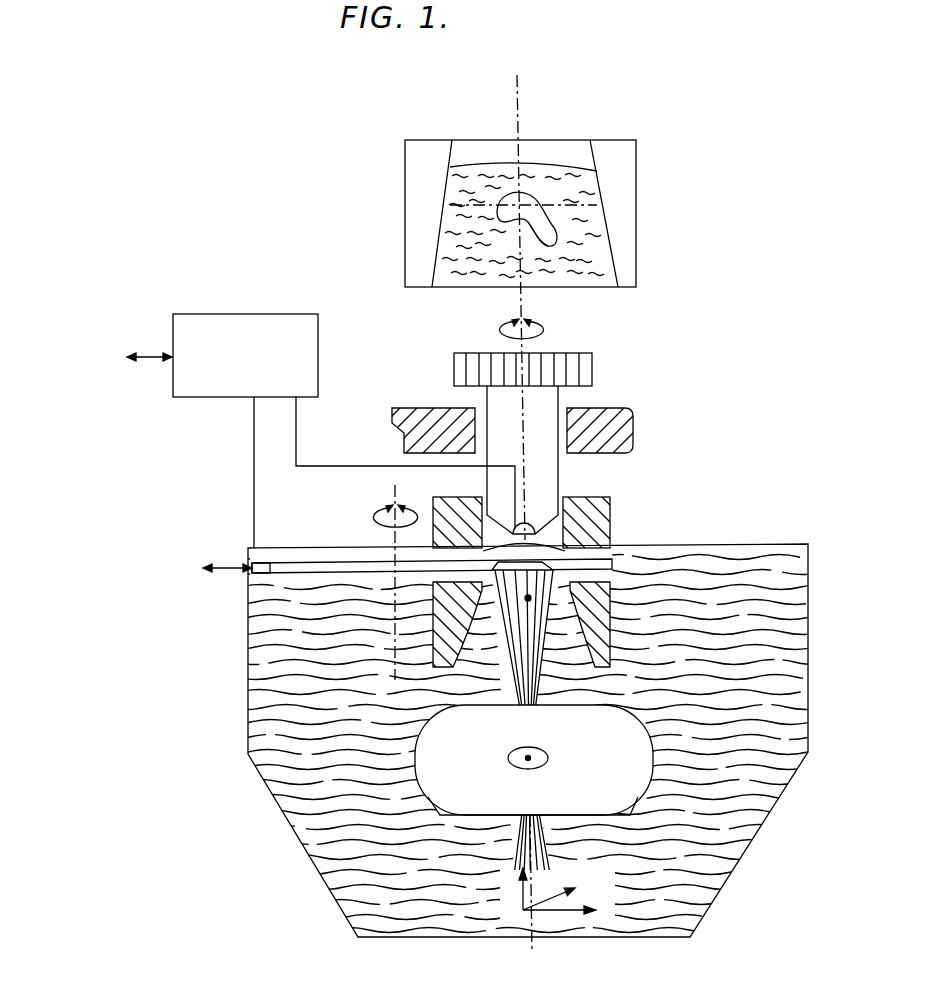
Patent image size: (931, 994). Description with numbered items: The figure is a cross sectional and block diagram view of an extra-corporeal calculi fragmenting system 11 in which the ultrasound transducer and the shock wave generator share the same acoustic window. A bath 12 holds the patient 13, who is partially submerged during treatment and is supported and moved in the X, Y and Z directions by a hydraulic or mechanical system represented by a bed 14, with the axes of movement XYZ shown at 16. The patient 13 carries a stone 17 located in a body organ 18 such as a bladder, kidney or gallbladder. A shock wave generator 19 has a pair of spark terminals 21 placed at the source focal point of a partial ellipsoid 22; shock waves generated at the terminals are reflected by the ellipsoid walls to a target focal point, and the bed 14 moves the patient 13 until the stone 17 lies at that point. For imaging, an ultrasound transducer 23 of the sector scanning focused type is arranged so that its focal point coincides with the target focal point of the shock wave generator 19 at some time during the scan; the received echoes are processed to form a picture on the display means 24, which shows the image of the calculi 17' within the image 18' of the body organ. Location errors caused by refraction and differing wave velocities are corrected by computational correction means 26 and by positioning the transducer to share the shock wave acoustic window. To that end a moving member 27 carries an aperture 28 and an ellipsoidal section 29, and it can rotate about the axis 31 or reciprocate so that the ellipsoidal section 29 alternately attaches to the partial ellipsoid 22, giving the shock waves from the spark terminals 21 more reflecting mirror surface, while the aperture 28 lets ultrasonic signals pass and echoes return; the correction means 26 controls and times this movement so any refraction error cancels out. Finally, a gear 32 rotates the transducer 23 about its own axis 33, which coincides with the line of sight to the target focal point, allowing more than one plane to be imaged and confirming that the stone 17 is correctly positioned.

The extra-corporeal calculi fragmenting system 11 is at (189, 433).
The bath 12 is at (808, 598).
The patient 13 is at (653, 736).
The bed 14 is at (632, 807).
The axes of movement XYZ 16 is at (597, 895).
The stone 17 is at (553, 741).
The image of the calculi 17' is at (535, 208).
The body organ 18 is at (542, 766).
The image of the body organ 18' is at (559, 239).
The shock wave generator 19 is at (607, 517).
The spark terminals 21 is at (532, 599).
The partial ellipsoid 22 is at (466, 655).
The ultrasound transducer 23 is at (553, 406).
The display means 24 is at (634, 289).
The correction means 26 is at (238, 314).
The moving member 27 is at (260, 575).
The aperture 28 is at (333, 575).
The ellipsoidal section 29 is at (556, 567).
The axis 31 is at (399, 501).
The gear 32 is at (593, 370).
The axis of the transducer 33 is at (524, 305).